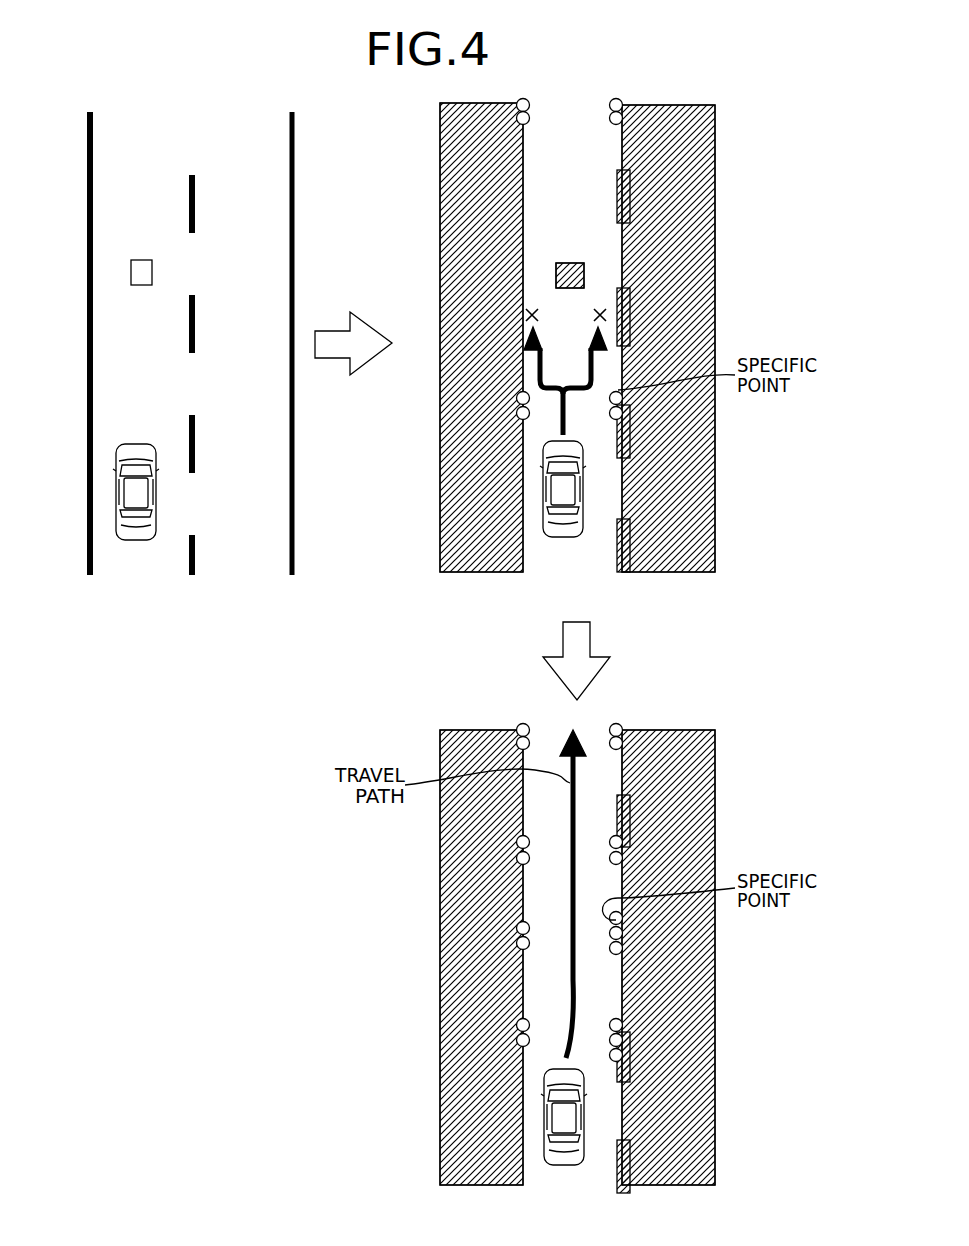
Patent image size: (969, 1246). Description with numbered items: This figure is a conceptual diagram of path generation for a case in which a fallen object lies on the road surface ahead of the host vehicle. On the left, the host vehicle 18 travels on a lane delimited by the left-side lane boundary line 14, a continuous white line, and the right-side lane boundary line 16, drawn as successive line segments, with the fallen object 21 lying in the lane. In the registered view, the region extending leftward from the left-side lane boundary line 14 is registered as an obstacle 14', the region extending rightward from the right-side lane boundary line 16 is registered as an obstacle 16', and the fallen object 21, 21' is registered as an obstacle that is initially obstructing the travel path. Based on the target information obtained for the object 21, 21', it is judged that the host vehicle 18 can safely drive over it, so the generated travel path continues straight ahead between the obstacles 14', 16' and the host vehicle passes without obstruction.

The left-side lane boundary line 14 is at (61, 364).
The right-side lane boundary line 16 is at (242, 350).
The host vehicle 18 is at (135, 530).
The fallen object 21 is at (93, 273).
The obstacle 14' is at (452, 642).
The obstacle 16' is at (693, 646).
The fallen object (registered obstacle) 21' is at (662, 275).